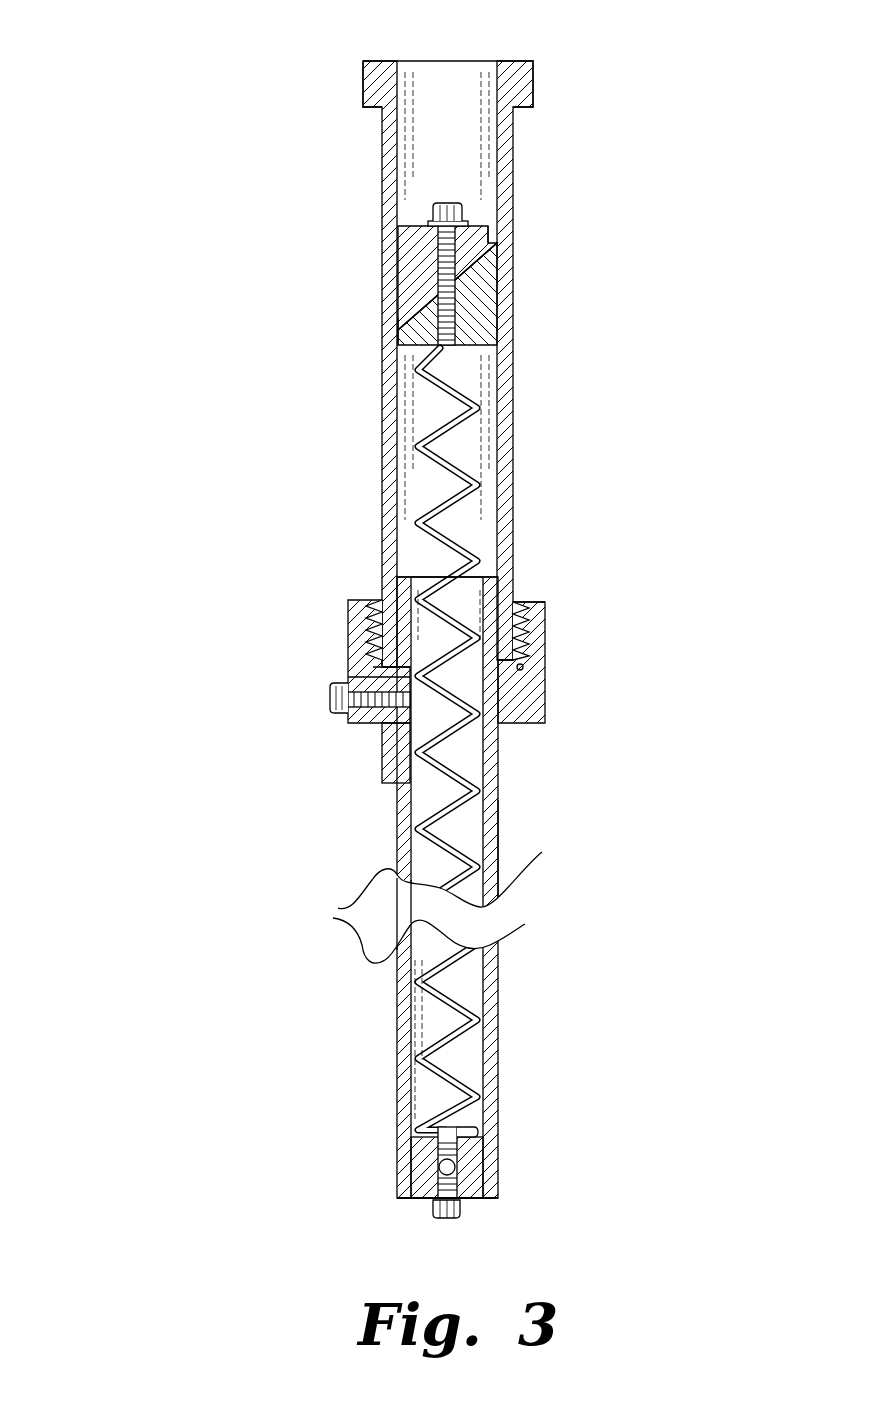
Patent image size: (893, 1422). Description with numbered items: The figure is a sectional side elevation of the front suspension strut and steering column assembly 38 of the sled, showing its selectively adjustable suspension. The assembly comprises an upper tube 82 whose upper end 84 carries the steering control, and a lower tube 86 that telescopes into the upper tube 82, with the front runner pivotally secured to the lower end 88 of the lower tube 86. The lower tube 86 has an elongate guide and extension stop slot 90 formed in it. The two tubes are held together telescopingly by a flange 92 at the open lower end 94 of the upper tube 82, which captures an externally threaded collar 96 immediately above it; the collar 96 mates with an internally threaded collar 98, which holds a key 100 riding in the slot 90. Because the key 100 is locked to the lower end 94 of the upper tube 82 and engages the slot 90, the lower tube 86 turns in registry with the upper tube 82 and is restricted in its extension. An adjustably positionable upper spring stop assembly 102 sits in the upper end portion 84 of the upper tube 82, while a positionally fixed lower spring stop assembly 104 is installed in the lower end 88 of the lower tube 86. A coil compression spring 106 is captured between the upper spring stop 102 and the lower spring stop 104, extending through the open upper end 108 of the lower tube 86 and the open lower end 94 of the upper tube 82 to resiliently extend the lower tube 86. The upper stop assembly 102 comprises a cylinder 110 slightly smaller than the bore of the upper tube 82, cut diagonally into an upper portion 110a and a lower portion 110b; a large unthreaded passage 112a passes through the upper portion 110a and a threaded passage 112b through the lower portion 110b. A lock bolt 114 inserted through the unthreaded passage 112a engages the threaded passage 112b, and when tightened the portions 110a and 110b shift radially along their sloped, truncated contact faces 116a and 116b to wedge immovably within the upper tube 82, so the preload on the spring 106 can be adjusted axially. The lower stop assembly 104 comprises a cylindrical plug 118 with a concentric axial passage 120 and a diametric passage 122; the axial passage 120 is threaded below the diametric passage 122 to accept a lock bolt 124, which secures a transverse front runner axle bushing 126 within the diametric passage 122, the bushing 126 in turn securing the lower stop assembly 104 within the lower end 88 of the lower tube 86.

The front suspension strut and steering column assembly 38 is at (150, 950).
The upper tube 82 is at (382, 423).
The upper end of upper tube 84 is at (383, 126).
The lower tube 86 is at (500, 862).
The lower end of lower tube 88 is at (498, 1143).
The guide and extension stop slot 90 is at (449, 856).
The flange 92 is at (558, 635).
The open lower end of upper tube 94 is at (523, 688).
The externally threaded collar 96 is at (518, 602).
The internally threaded collar 98 is at (545, 627).
The key 100 is at (382, 750).
The upper spring stop assembly 102 is at (449, 175).
The lower spring stop assembly 104 is at (485, 1213).
The coil compression spring 106 is at (470, 485).
The open upper end of lower tube 108 is at (420, 577).
The cylinder 110 is at (449, 248).
The upper portion of stop cylinder 110a is at (397, 253).
The lower portion of stop cylinder 110b is at (500, 300).
The unthreaded passage 112a is at (404, 277).
The threaded passage 112b is at (490, 330).
The lock bolt 114 is at (488, 178).
The upper contact face 116a is at (497, 267).
The lower contact face 116b is at (395, 313).
The cylindrical plug 118 is at (483, 1168).
The axial passage 120 is at (438, 1150).
The diametric passage 122 is at (438, 1166).
The lock bolt 124 is at (447, 1218).
The transverse front runner axle bushing 126 is at (425, 1197).